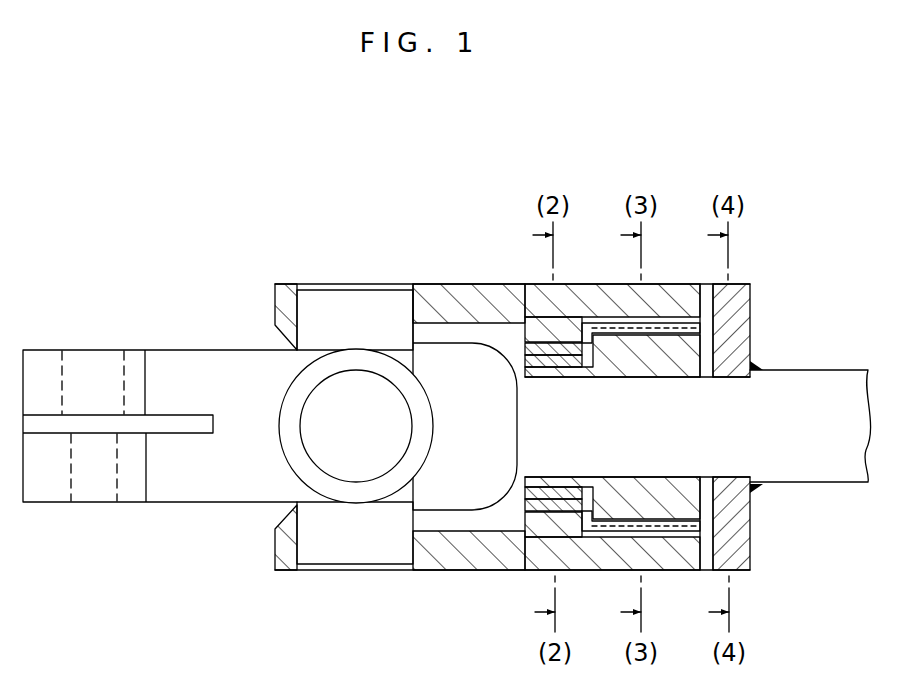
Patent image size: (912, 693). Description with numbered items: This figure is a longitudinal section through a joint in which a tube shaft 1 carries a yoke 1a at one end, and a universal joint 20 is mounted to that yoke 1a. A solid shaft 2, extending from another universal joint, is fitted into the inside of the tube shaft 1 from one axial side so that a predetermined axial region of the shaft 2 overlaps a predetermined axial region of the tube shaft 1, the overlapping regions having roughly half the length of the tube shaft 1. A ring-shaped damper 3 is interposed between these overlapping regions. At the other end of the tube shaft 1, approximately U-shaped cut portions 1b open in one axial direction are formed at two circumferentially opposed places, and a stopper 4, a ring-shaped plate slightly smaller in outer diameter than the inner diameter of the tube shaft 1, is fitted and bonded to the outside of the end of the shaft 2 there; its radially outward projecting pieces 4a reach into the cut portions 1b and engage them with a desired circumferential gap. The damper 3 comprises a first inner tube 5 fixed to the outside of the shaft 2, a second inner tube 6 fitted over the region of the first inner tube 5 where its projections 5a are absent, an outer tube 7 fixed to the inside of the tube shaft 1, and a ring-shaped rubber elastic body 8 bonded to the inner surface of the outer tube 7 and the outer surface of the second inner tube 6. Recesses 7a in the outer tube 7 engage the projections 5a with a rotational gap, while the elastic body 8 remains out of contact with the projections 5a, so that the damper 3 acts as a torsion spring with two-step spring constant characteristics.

The tube shaft 1 is at (480, 282).
The yoke 1a is at (432, 292).
The cut portions 1b is at (707, 283).
The solid shaft 2 is at (837, 468).
The damper 3 is at (521, 507).
The stopper 4 is at (738, 367).
The projecting pieces 4a is at (738, 297).
The first inner tube 5 is at (615, 372).
The projections 5a is at (690, 502).
The second inner tube 6 is at (526, 359).
The outer tube 7 is at (540, 323).
The recesses 7a is at (705, 342).
The elastic body 8 is at (525, 348).
The universal joint 20 is at (273, 340).